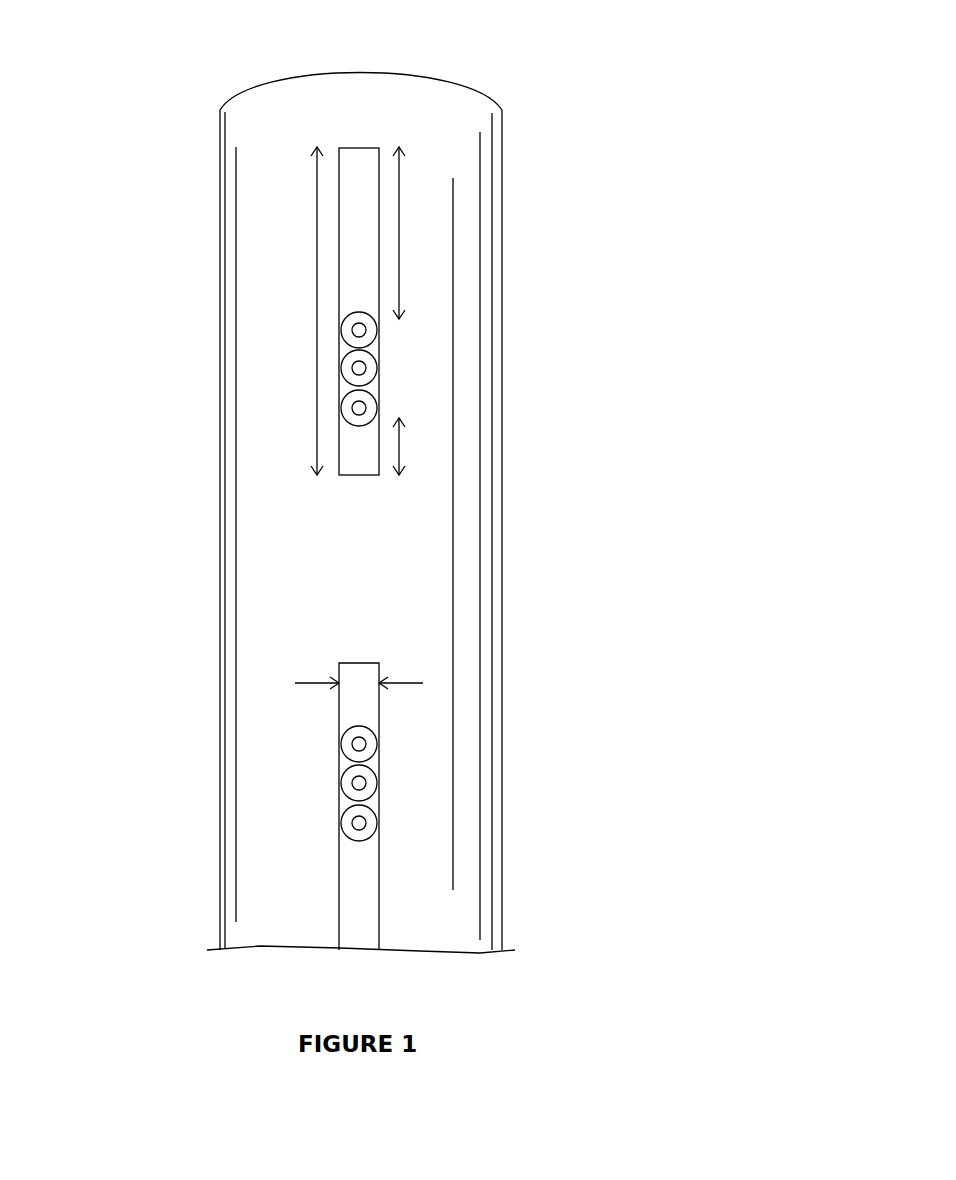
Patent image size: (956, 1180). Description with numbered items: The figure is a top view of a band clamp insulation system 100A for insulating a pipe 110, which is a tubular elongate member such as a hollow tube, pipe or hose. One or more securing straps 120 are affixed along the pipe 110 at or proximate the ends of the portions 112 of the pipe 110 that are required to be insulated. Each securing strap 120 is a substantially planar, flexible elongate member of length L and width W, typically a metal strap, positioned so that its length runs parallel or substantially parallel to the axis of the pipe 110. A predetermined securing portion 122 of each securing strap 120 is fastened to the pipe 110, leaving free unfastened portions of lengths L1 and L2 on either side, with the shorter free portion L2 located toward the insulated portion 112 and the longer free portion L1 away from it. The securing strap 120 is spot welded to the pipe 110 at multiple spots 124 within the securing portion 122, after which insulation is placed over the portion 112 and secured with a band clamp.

The band clamp insulation system 100A is at (685, 101).
The pipe 110 is at (500, 600).
The portion of the pipe 112 is at (352, 583).
The securing strap 120 is at (353, 252).
The predetermined securing portion 122 is at (368, 370).
The spot weld locations 124 is at (352, 408).